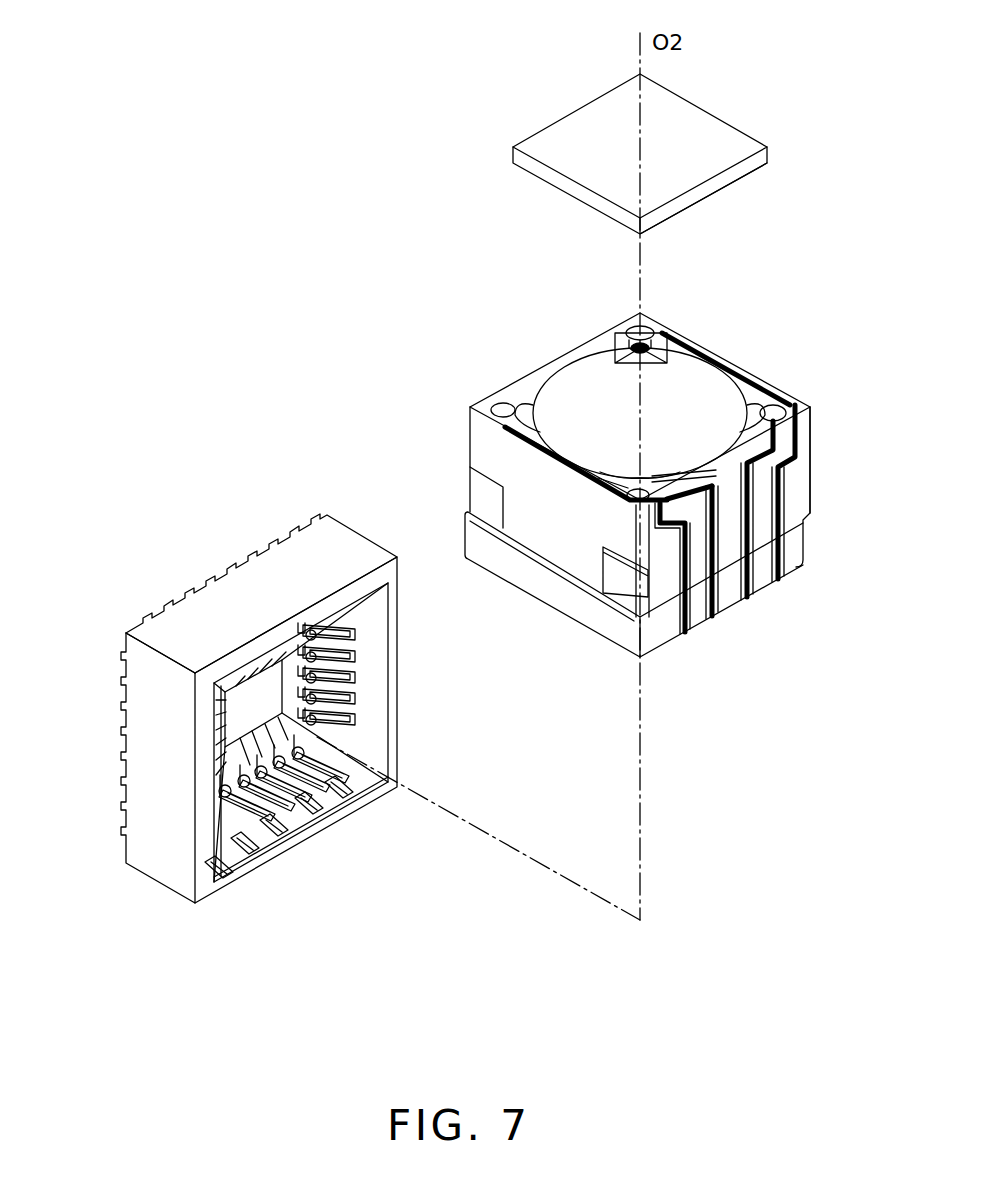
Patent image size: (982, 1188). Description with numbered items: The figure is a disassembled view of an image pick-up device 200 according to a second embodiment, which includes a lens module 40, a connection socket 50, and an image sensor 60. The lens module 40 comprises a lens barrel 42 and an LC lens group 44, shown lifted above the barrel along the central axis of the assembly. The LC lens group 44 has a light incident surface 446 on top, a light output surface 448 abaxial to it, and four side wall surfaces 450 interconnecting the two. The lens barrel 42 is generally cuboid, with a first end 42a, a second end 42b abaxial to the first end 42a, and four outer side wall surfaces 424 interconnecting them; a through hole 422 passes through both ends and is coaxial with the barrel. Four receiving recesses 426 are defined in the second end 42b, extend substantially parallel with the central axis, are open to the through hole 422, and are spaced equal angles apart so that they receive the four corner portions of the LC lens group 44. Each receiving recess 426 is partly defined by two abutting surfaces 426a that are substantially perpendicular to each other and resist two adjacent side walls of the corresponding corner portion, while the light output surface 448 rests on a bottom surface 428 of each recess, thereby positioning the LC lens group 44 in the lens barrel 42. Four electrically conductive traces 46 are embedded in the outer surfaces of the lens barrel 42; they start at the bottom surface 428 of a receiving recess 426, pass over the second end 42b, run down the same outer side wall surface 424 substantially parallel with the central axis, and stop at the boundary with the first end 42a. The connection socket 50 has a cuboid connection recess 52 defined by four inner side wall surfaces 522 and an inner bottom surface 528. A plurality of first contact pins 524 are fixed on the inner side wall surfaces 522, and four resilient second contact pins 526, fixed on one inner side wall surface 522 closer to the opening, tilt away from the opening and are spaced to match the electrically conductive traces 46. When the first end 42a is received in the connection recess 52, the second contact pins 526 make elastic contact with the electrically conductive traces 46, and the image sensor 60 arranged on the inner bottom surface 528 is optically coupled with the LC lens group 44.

The image pick-up device 200 is at (265, 122).
The lens module 40 is at (386, 207).
The lens barrel 42 is at (483, 440).
The first end 42a is at (541, 606).
The second end 42b is at (622, 325).
The through hole 422 is at (714, 384).
The outer side wall surfaces 424 is at (798, 482).
The receiving recesses 426 is at (647, 330).
The abutting surfaces 426a is at (620, 353).
The bottom surface 428 is at (727, 372).
The LC lens group 44 is at (535, 167).
The light incident surface 446 is at (693, 122).
The light output surface 448 is at (719, 193).
The side wall surfaces 450 is at (758, 163).
The electrically conductive traces 46 is at (717, 597).
The connection socket 50 is at (217, 600).
The connection recess 52 is at (377, 607).
The inner side wall surfaces 522 is at (381, 680).
The first contact pins 524 is at (350, 730).
The second contact pins 526 is at (242, 847).
The inner bottom surface 528 is at (290, 650).
The image sensor 60 is at (237, 718).